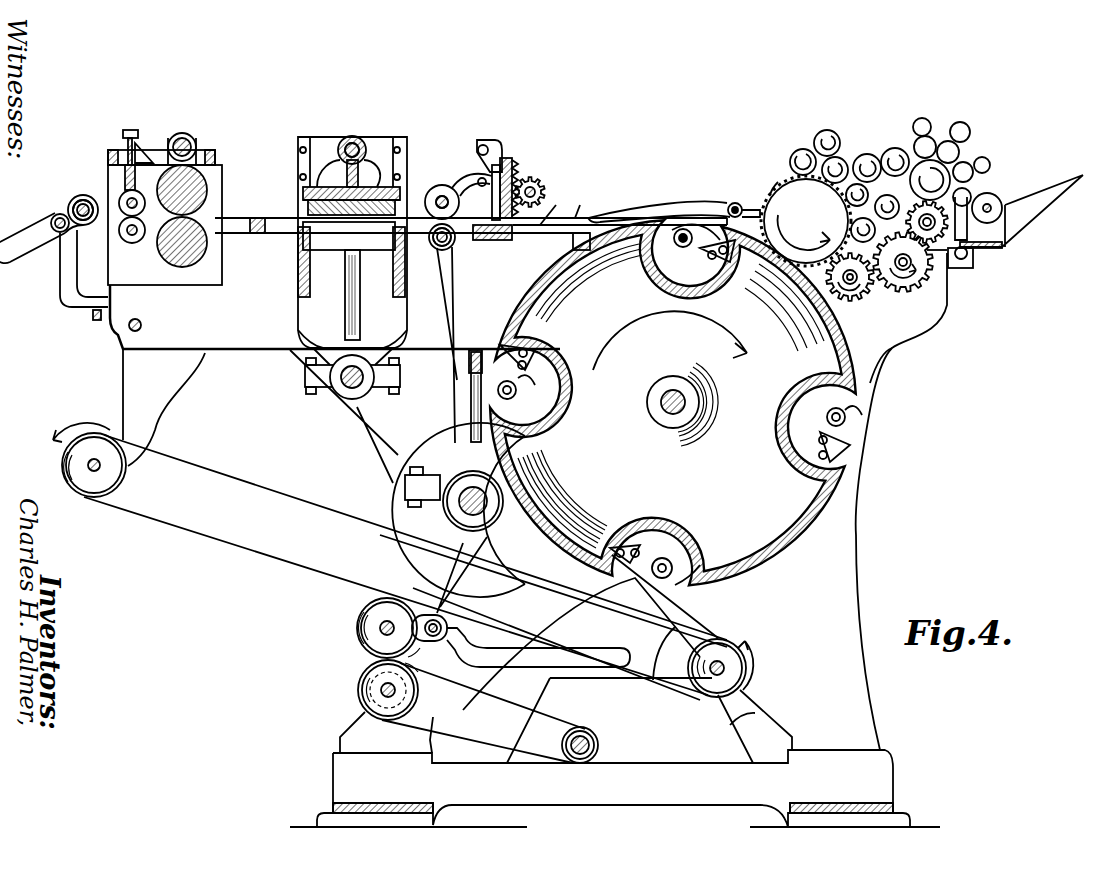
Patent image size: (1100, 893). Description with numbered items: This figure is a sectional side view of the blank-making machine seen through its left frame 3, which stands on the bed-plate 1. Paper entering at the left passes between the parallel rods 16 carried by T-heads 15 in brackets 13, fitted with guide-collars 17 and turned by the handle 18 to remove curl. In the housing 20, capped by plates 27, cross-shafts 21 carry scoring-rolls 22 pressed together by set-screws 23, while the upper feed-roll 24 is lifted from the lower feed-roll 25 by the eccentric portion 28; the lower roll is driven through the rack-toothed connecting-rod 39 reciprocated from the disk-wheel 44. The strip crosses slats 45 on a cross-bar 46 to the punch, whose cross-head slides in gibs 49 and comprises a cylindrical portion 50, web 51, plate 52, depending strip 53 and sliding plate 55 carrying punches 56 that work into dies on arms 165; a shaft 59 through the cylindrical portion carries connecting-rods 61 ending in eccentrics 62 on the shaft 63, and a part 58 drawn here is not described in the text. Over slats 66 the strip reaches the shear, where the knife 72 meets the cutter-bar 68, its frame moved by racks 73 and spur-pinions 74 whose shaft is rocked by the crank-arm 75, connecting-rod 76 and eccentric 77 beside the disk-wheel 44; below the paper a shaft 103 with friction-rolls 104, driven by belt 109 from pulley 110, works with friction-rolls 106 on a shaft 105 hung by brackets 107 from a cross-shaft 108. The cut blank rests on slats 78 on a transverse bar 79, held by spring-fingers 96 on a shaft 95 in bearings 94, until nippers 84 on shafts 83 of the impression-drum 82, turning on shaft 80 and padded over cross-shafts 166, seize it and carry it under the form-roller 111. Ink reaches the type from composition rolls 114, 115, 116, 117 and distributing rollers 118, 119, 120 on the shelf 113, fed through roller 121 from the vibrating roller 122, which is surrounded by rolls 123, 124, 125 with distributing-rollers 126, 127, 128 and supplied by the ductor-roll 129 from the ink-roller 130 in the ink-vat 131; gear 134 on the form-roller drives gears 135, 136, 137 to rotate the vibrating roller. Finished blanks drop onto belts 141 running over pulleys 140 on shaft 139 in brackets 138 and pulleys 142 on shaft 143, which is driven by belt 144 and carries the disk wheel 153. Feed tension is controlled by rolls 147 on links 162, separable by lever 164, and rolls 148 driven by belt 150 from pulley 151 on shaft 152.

The bed-plate 1 is at (615, 702).
The upright frame 3 is at (877, 500).
The upright brackets 13 is at (141, 248).
The T-heads 15 is at (60, 214).
The parallel rods 16 is at (83, 195).
The guide-collars 17 is at (91, 199).
The handle 18 is at (25, 258).
The housing 20 is at (183, 222).
The cross-shafts 21 is at (137, 208).
The scoring-rolls 22 is at (132, 241).
The set-screws 23 is at (138, 139).
The upper feed-roll 24 is at (142, 177).
The lower feed-roll 25 is at (165, 262).
The plates 27 is at (218, 160).
The enlarged eccentric portion 28 is at (196, 138).
The connecting-rod 39 is at (344, 416).
The disk-wheel 44 is at (458, 518).
The slats 45 is at (232, 218).
The cross-bar 46 is at (258, 233).
The gibs 49 is at (298, 140).
The horizontal cylindrical portion 50 is at (352, 136).
The central web 51 is at (348, 173).
The horizontal plate 52 is at (303, 192).
The depending strip 53 is at (428, 203).
The plate 55 is at (308, 210).
The punches 56 is at (349, 236).
The plate 58 is at (303, 203).
The shaft 59 is at (362, 140).
The connecting-rods 61 is at (360, 293).
The eccentrics 62 is at (352, 346).
The shaft 63 is at (352, 374).
The slats 66 is at (458, 239).
The cutter-bar 68 is at (560, 218).
The knife 72 is at (552, 208).
The racks 73 is at (518, 162).
The spur-pinions 74 is at (537, 180).
The crank-arm 75 is at (500, 138).
The adjustable connecting-rod 76 is at (471, 405).
The eccentric 77 is at (473, 494).
The slats 78 is at (580, 204).
The transverse bar 79 is at (573, 240).
The shaft 80 is at (647, 402).
The impression-drum 82 is at (673, 402).
The shafts 83 is at (683, 247).
The nippers 84 is at (720, 222).
The bearings 94 is at (755, 203).
The shaft 95 is at (740, 203).
The spring-fingers 96 is at (668, 200).
The shaft 103 is at (450, 247).
The friction-rolls 104 is at (438, 248).
The shaft 105 is at (432, 190).
The friction-rolls 106 is at (466, 172).
The brackets 107 is at (470, 185).
The cross-shaft 108 is at (492, 195).
The belt 109 is at (457, 320).
The pulley 110 is at (452, 525).
The form-roller 111 is at (806, 221).
The shelf 113 is at (887, 350).
The composition roll 114 is at (800, 150).
The composition roll 115 is at (843, 160).
The composition roll 116 is at (868, 195).
The composition roll 117 is at (865, 230).
The roller 118 is at (830, 130).
The roller 119 is at (870, 154).
The roller 120 is at (888, 207).
The roller 121 is at (895, 148).
The vibrating roller 122 is at (928, 201).
The roll 123 is at (932, 140).
The roll 124 is at (957, 148).
The roll 125 is at (973, 172).
The distributing-roller 126 is at (922, 118).
The distributing-roller 127 is at (964, 124).
The distributing-roller 128 is at (988, 160).
The ductor-roll 129 is at (971, 194).
The ink-roller 130 is at (985, 222).
The ink-vat 131 is at (1035, 218).
The gear 134 is at (772, 177).
The gear 135 is at (860, 295).
The gear 136 is at (902, 268).
The gear 137 is at (965, 272).
The brackets 138 is at (335, 375).
The shaft 139 is at (92, 471).
The pulleys 140 is at (118, 480).
The belts 141 is at (290, 505).
The pulleys 142 is at (735, 650).
The shaft 143 is at (712, 673).
The belt 144 is at (718, 617).
The rolls 147 is at (357, 628).
The rolls 148 is at (358, 690).
The belt 150 is at (497, 707).
The pulley 151 is at (595, 740).
The shaft 152 is at (594, 750).
The plain-faced disk wheel 153 is at (669, 653).
The links 162 is at (433, 636).
The lever 164 is at (538, 647).
The arms 165 is at (385, 270).
The cross-shafts 166 is at (712, 259).